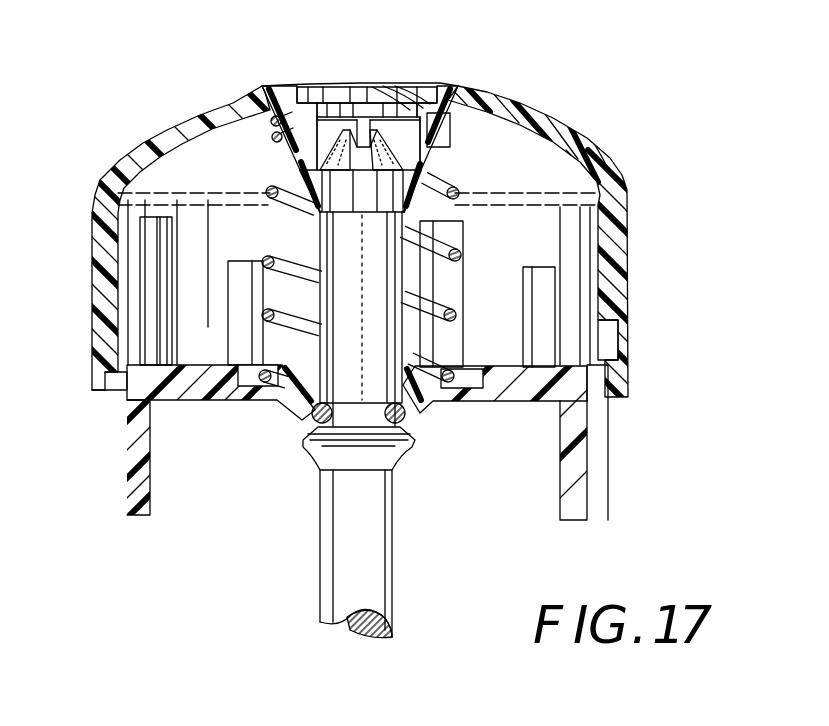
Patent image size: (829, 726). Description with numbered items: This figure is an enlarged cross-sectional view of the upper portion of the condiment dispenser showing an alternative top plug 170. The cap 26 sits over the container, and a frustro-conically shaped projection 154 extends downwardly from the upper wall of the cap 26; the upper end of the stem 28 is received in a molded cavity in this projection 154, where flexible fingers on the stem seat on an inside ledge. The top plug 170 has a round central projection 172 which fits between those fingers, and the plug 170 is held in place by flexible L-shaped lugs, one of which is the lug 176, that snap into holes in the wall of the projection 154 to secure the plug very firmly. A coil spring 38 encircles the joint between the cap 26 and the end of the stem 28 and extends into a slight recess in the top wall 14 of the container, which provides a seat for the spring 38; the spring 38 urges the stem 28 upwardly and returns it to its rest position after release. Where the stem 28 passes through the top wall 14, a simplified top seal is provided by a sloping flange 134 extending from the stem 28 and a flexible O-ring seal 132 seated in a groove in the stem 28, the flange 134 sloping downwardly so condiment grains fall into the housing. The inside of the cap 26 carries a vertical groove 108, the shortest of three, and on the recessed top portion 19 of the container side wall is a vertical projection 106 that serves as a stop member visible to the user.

The cap 26 is at (623, 163).
The top plug 170 is at (380, 73).
The round central projection 172 is at (362, 130).
The flexible L-shaped lug 176 is at (443, 88).
The frustro-conically shaped projection 154 is at (295, 155).
The coil spring 38 is at (457, 190).
The top wall 14 is at (198, 365).
The recessed top portion 19 is at (127, 460).
The vertical projection 106 is at (597, 443).
The vertical groove 108 is at (610, 335).
The O-ring seal 132 is at (408, 423).
The sloping flange 134 is at (306, 447).
The stem 28 is at (393, 535).